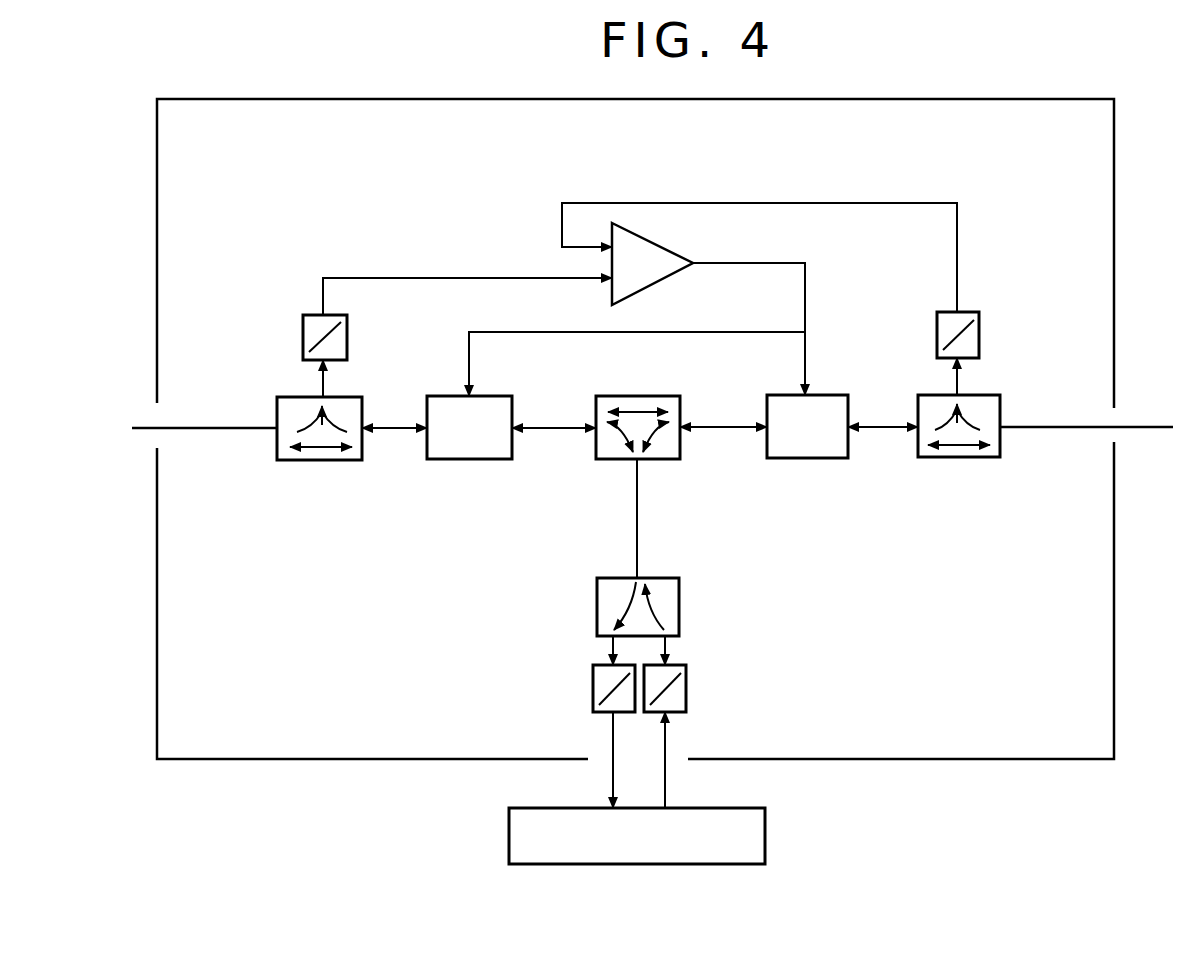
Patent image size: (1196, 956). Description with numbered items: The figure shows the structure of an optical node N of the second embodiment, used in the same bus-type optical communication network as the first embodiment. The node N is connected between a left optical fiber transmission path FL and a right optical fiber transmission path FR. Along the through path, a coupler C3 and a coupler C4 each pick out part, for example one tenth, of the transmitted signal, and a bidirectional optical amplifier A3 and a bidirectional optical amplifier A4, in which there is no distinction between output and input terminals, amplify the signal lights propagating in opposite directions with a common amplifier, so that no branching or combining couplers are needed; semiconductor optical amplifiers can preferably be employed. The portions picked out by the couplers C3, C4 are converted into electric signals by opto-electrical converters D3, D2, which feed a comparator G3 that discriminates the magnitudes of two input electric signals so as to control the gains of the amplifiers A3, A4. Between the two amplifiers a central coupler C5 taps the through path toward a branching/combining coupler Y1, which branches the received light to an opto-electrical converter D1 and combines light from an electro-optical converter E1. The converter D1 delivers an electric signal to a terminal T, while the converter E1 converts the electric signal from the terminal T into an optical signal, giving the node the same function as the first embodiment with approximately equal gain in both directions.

The optical node N is at (1070, 97).
The optical fiber transmission path FL is at (140, 427).
The optical fiber transmission path FR is at (1163, 426).
The coupler C3 is at (310, 462).
The bidirectional optical amplifier A3 is at (466, 461).
The optical coupler C5 is at (626, 394).
The bidirectional optical amplifier A4 is at (818, 460).
The coupler C4 is at (960, 459).
The opto-electrical converter D3 is at (347, 322).
The opto-electrical converter D2 is at (979, 320).
The comparator G3 is at (672, 212).
The coupler Y1 is at (680, 592).
The opto-electrical converter D1 is at (593, 683).
The electro-optical converter E1 is at (686, 676).
The terminal T is at (765, 820).